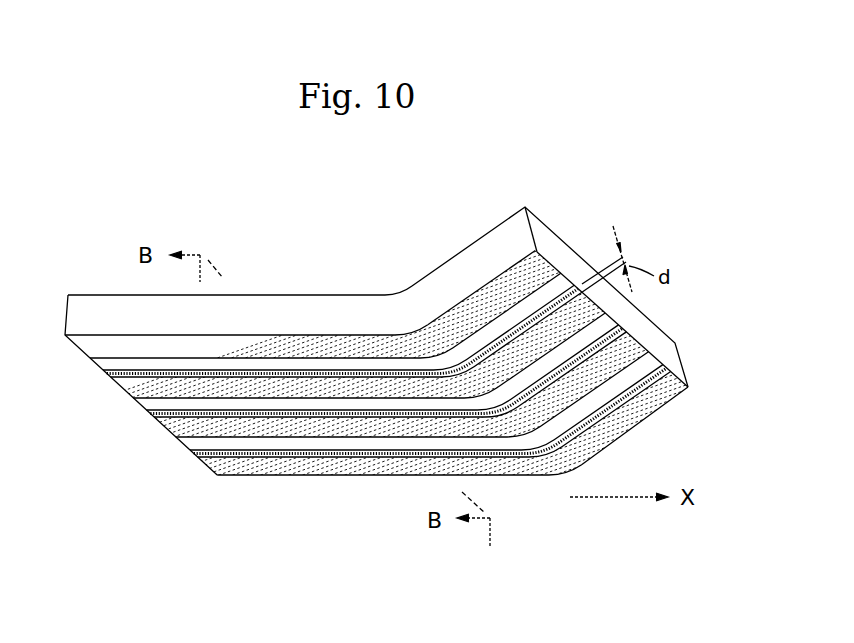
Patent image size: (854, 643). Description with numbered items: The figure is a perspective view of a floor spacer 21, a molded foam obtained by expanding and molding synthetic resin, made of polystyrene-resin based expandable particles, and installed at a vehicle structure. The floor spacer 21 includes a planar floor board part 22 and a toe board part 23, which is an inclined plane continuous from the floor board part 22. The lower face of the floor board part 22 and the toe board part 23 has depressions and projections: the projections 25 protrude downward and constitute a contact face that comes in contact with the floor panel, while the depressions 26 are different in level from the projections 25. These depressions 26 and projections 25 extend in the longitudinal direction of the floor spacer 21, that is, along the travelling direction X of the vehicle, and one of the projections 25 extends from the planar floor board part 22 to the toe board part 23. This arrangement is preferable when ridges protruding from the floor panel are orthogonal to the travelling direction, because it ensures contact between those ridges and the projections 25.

The floor spacer 21 is at (290, 189).
The floor board part 22 is at (298, 312).
The toe board part 23 is at (490, 250).
The projections 25 is at (78, 345).
The depressions 26 is at (108, 368).